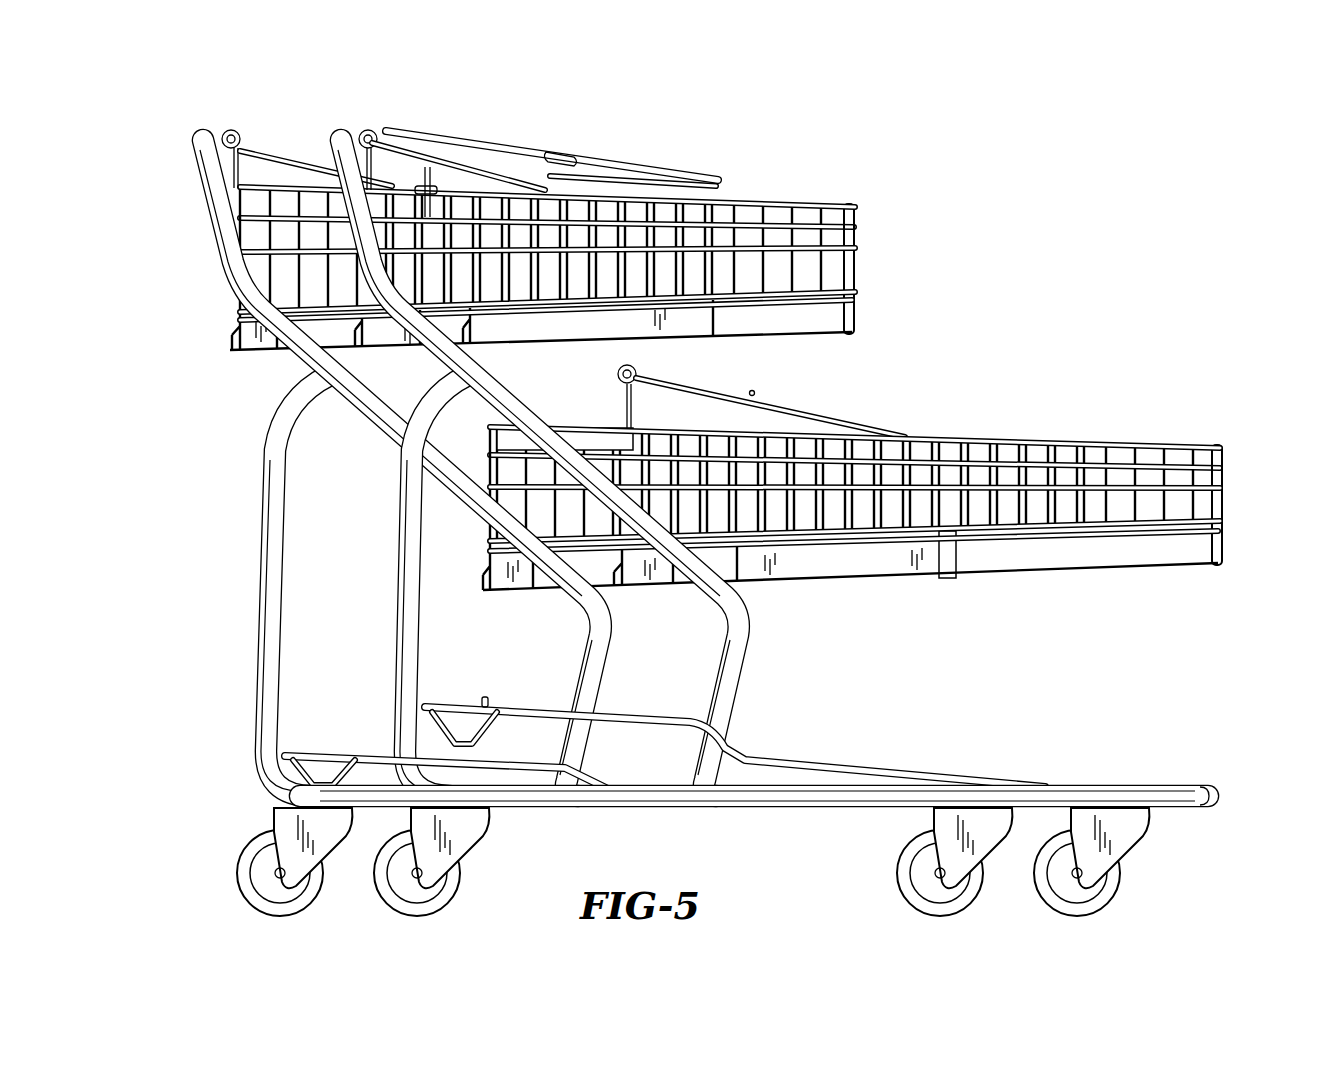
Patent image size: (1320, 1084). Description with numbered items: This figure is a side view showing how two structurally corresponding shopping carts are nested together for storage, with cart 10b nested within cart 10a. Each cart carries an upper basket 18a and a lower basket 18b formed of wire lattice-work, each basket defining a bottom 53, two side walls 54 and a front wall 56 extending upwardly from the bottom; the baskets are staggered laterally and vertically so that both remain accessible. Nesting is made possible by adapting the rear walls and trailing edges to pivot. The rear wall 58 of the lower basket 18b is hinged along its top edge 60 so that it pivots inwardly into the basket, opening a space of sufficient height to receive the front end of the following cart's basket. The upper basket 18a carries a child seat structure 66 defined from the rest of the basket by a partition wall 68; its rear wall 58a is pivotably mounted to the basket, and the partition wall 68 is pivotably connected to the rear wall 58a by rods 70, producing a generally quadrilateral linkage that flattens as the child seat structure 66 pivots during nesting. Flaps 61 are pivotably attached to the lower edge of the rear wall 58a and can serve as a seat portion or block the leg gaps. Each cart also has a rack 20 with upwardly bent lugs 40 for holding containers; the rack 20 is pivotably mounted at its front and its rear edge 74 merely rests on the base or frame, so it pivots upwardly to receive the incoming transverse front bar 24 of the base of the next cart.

The cart 10a is at (1006, 283).
The cart 10b is at (222, 388).
The upper basket 18a is at (826, 162).
The lower basket 18b is at (1238, 446).
The rack 20 is at (857, 754).
The transverse front bar 24 is at (1214, 793).
The lugs 40 is at (342, 750).
The bottom 53 is at (802, 331).
The side walls 54 is at (742, 202).
The front wall 56 is at (853, 240).
The rear wall 58 is at (734, 397).
The rear wall 58a is at (467, 162).
The top edge 60 is at (652, 358).
The flaps 61 is at (628, 182).
The child seat structure 66 is at (452, 126).
The partition wall 68 is at (650, 168).
The rods 70 is at (588, 183).
The rear edge 74 is at (474, 690).